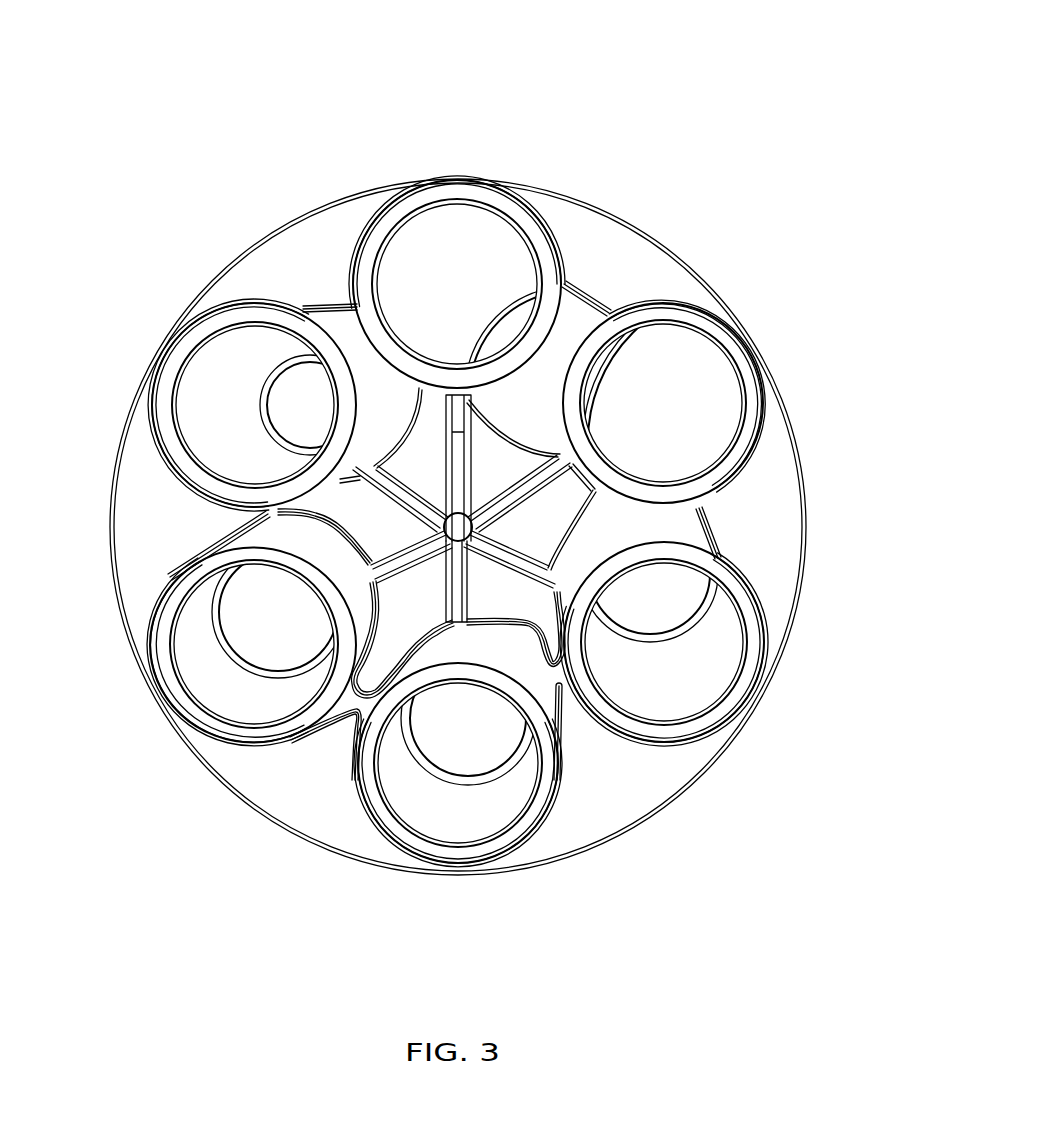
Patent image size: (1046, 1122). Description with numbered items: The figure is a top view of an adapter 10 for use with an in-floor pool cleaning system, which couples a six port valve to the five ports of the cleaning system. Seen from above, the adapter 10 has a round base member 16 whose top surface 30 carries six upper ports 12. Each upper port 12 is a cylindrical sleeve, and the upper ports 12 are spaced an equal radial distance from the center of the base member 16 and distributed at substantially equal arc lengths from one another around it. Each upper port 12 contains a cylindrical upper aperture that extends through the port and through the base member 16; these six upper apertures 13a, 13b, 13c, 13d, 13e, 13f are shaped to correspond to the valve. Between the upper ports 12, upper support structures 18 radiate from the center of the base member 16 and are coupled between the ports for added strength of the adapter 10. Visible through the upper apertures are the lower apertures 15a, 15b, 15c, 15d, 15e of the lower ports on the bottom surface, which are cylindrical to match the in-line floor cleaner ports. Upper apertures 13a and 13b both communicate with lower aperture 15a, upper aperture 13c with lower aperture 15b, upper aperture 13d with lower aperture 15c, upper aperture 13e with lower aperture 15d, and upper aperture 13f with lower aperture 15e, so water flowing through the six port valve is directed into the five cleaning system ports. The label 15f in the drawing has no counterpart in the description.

The adapter 10 is at (607, 82).
The upper port 12 is at (677, 735).
The upper aperture 13a is at (441, 280).
The upper aperture 13b is at (692, 393).
The upper aperture 13c is at (710, 657).
The upper aperture 13d is at (408, 793).
The upper aperture 13e is at (194, 667).
The upper aperture 13f is at (210, 410).
The lower aperture 15a is at (603, 373).
The lower aperture 15b is at (660, 597).
The lower aperture 15c is at (474, 737).
The lower aperture 15d is at (280, 632).
The lower aperture 15e is at (295, 393).
The inner cup bottom 15f is at (310, 405).
The base member 16 is at (340, 222).
The upper support structure 18 is at (527, 568).
The top surface 30 is at (313, 279).